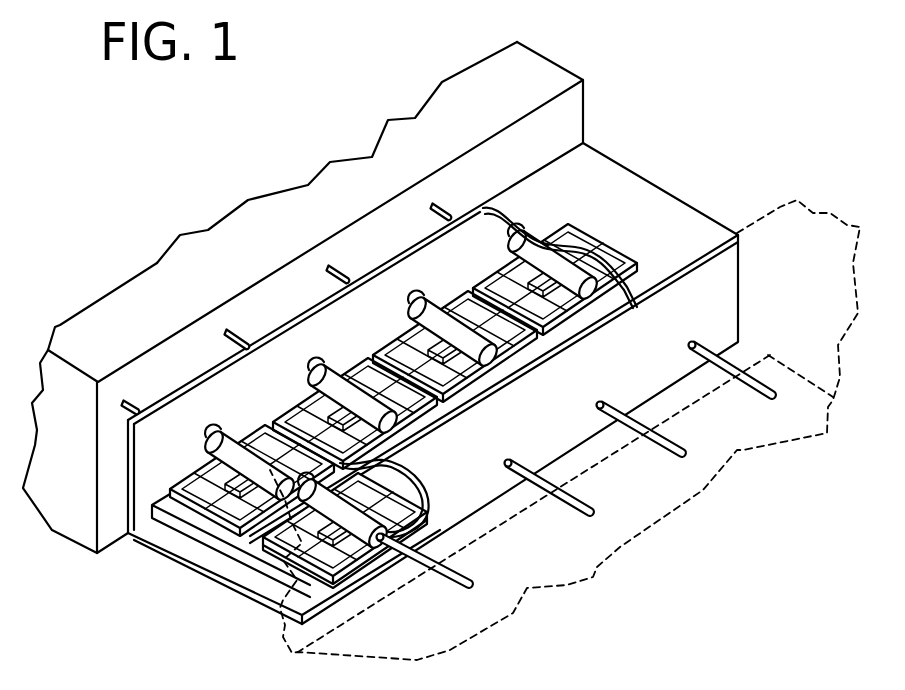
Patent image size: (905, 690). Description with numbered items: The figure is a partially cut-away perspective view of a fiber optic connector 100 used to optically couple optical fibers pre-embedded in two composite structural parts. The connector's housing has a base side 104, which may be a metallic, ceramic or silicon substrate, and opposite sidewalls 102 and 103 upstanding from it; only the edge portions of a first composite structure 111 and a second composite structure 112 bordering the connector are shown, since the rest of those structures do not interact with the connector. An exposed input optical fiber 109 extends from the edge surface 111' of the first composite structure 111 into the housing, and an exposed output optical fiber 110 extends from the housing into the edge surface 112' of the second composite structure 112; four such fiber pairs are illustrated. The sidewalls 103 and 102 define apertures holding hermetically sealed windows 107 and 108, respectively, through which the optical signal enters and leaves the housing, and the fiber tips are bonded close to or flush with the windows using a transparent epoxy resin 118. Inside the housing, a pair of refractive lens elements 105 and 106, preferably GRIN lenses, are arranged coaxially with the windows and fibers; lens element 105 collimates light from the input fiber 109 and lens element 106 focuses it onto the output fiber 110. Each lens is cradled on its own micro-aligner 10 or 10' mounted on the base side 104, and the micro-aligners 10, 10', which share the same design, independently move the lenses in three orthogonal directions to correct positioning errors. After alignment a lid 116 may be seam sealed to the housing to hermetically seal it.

The micro-aligner 10 is at (390, 380).
The micro-aligner 10' is at (287, 531).
The fiber optic connector 100 is at (598, 172).
The sidewall 102 is at (712, 315).
The sidewall 103 is at (274, 403).
The base side 104 is at (250, 579).
The lens element 105 is at (512, 252).
The lens element 106 is at (393, 468).
The window 107 is at (222, 469).
The window 108 is at (379, 555).
The input optical fiber 109 is at (235, 330).
The output optical fiber 110 is at (592, 486).
The first composite structure 111 is at (303, 297).
The edge surface 111' is at (592, 92).
The second composite structure 112 is at (565, 503).
The edge surface 112' is at (565, 398).
The lid 116 is at (633, 227).
The transparent epoxy resin 118 is at (512, 459).